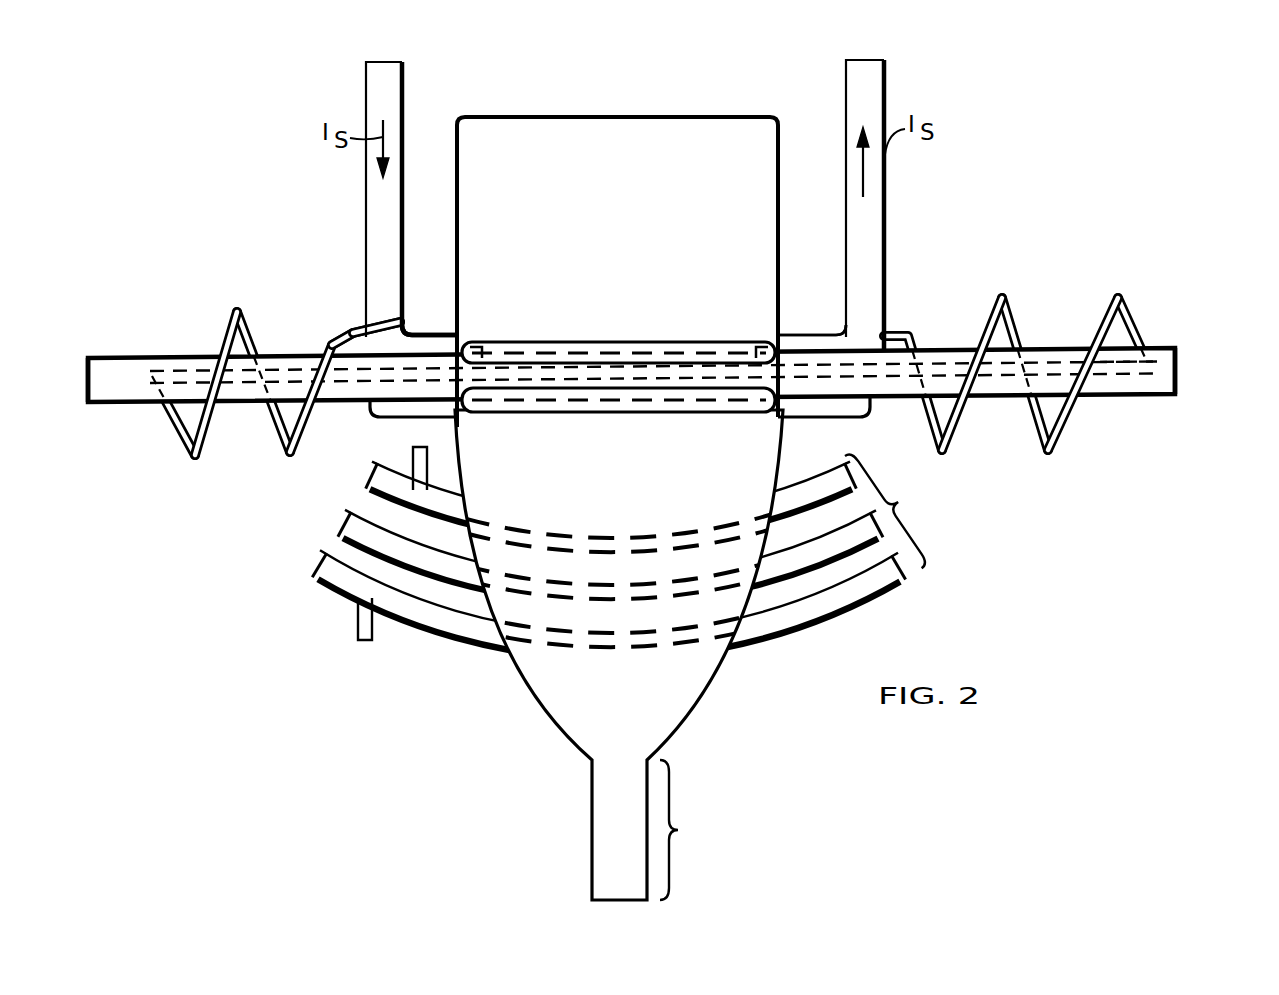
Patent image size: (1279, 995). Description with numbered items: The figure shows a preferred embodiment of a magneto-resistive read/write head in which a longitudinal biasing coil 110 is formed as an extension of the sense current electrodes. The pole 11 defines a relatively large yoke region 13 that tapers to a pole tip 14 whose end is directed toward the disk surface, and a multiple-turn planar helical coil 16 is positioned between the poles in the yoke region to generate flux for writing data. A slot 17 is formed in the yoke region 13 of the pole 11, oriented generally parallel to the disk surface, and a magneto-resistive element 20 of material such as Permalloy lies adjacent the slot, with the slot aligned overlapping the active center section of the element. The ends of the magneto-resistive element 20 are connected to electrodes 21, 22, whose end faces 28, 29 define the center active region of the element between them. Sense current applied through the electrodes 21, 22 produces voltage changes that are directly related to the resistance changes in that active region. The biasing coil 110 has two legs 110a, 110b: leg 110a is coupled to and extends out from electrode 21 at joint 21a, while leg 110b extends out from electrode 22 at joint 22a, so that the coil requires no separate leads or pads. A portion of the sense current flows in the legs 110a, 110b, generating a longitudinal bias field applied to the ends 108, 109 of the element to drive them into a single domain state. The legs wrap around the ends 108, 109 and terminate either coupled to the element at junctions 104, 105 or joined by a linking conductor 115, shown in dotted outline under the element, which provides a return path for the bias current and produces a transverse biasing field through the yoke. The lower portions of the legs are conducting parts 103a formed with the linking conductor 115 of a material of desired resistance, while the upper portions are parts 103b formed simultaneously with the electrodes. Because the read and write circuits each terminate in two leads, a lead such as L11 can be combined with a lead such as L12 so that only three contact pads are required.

The pole 11 is at (494, 699).
The yoke region 13 is at (712, 117).
The pole tip 14 is at (680, 830).
The multiple-turn planar helical coil 16 is at (624, 552).
The slot 17 is at (560, 372).
The magneto-resistive element 20 is at (104, 412).
The electrode 21 is at (390, 76).
The joint 21a is at (397, 330).
The electrode 22 is at (888, 86).
The joint 22a is at (866, 333).
The end face 28 is at (498, 345).
The end face 29 is at (748, 345).
The conducting parts 103a is at (172, 428).
The parts 103b is at (218, 372).
The junction 104 is at (157, 376).
The junction 105 is at (1178, 370).
The end of MR element 108 is at (86, 380).
The end of MR element 109 is at (1122, 386).
The longitudinal biasing coil 110 is at (214, 298).
The leg 110a is at (262, 314).
The leg 110b is at (1040, 292).
The linking conductor 115 is at (348, 404).
The lead L11 is at (413, 449).
The lead L12 is at (358, 642).